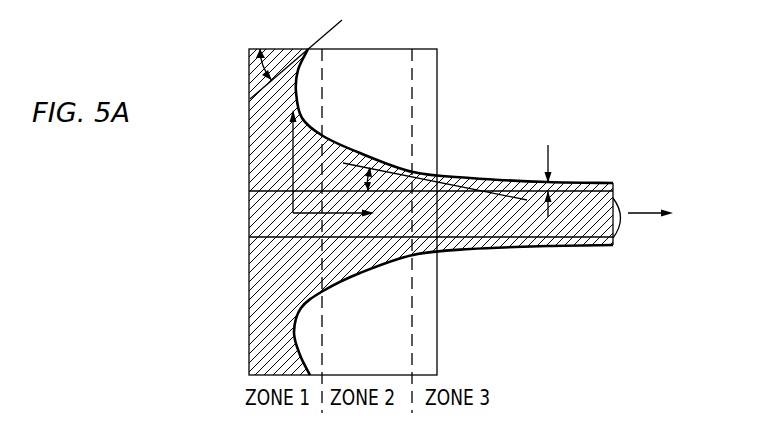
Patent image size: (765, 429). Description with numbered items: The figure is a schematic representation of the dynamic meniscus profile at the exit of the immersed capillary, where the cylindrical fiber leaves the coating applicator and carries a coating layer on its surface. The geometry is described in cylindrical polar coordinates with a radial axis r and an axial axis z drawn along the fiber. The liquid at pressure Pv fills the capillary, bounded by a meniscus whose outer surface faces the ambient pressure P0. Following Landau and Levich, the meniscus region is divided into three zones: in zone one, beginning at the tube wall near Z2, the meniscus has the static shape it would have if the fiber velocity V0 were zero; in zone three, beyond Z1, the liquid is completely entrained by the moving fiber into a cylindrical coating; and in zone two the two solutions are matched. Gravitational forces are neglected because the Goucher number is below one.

The axial position at the fluid/tube contact Z2 is at (296, 59).
The ambient pressure P0 is at (372, 210).
The liquid pressure Pv is at (274, 278).
The radial coordinate r is at (282, 161).
The axial coordinate z is at (333, 223).
The axial position at the fluid/fiber contact Z1 is at (435, 192).
The fiber velocity V0 is at (659, 222).